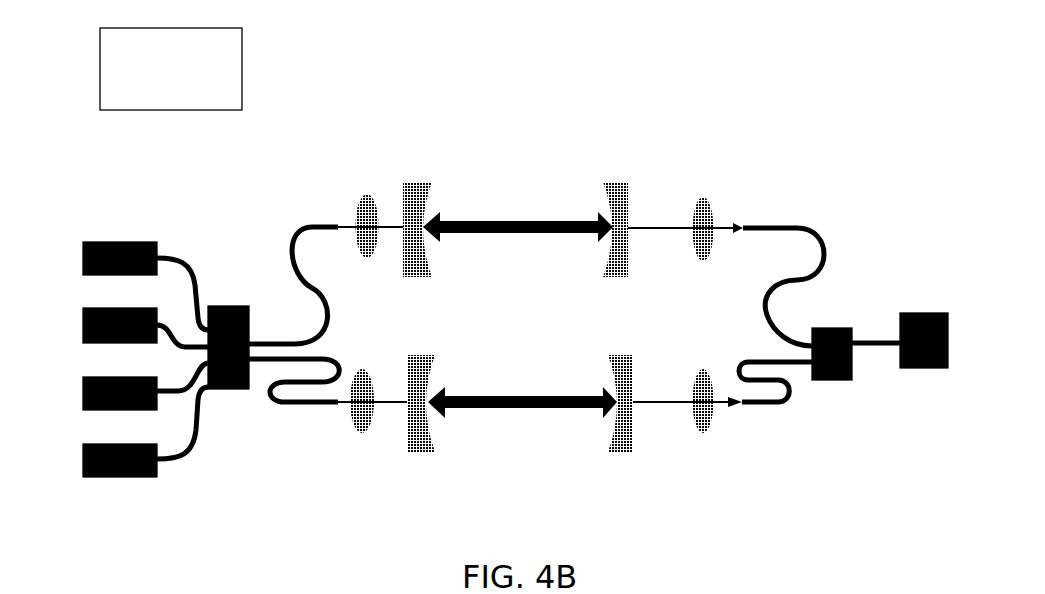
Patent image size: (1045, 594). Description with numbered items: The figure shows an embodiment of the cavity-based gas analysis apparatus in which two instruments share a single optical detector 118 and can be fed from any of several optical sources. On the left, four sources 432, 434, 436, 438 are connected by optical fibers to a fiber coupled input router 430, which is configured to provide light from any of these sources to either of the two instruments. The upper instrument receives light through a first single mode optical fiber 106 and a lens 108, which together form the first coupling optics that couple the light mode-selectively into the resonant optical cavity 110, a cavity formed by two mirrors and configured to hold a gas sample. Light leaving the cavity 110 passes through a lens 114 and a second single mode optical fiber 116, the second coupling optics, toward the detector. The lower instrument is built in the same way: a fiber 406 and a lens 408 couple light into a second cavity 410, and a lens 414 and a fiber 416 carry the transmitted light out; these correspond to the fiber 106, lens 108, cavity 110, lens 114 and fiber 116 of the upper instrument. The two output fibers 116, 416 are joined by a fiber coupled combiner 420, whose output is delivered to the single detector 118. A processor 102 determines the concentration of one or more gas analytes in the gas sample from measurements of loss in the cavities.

The processor 102 is at (193, 83).
The first single mode optical fiber 106 is at (305, 226).
The lens 108 is at (367, 205).
The resonant optical cavity 110 is at (628, 170).
The lens 114 is at (703, 210).
The second single mode optical fiber 116 is at (784, 226).
The optical detector 118 is at (920, 368).
The fiber 406 is at (303, 404).
The lens 408 is at (362, 380).
The cavity 410 is at (637, 462).
The lens 414 is at (702, 423).
The fiber 416 is at (765, 407).
The fiber coupled combiner 420 is at (840, 380).
The fiber coupled input router 430 is at (230, 389).
The source 432 is at (82, 255).
The source 434 is at (82, 327).
The source 436 is at (82, 393).
The source 438 is at (82, 465).